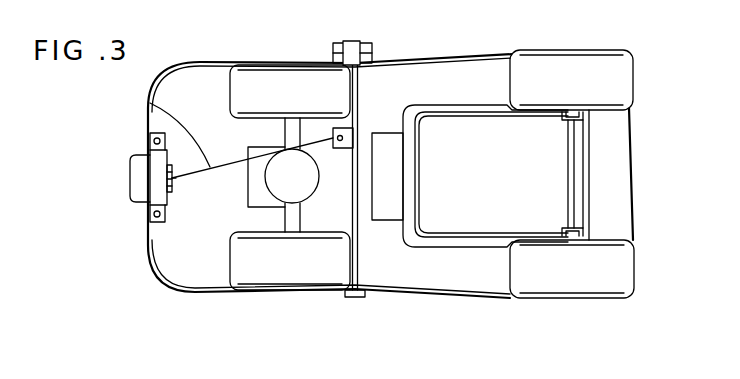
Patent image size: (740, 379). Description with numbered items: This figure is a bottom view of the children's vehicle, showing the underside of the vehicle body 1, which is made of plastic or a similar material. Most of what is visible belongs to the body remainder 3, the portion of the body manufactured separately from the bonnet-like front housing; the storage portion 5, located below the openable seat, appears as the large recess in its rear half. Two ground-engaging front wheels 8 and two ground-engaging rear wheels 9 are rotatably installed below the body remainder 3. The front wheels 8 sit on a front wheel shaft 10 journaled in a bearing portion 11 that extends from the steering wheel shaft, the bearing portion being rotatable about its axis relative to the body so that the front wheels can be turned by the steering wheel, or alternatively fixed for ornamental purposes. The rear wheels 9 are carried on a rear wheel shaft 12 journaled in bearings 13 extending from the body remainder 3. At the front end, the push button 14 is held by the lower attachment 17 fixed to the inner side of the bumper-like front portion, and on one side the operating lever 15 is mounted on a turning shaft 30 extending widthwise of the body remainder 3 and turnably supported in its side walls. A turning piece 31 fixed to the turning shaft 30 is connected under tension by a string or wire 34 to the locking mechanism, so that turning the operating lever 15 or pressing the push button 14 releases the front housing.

The vehicle body 1 is at (470, 54).
The body remainder 3 is at (400, 62).
The storage portion 5 is at (457, 248).
The front wheels 8 is at (283, 277).
The rear wheels 9 is at (577, 283).
The front wheel shaft 10 is at (287, 134).
The bearing portion 11 is at (275, 188).
The rear wheel shaft 12 is at (575, 172).
The bearings 13 is at (583, 232).
The push button 14 is at (133, 170).
The operating lever 15 is at (353, 48).
The lower attachment 17 is at (153, 198).
The turning shaft 30 is at (358, 230).
The turning piece 31 is at (343, 148).
The string or wire 34 is at (150, 107).